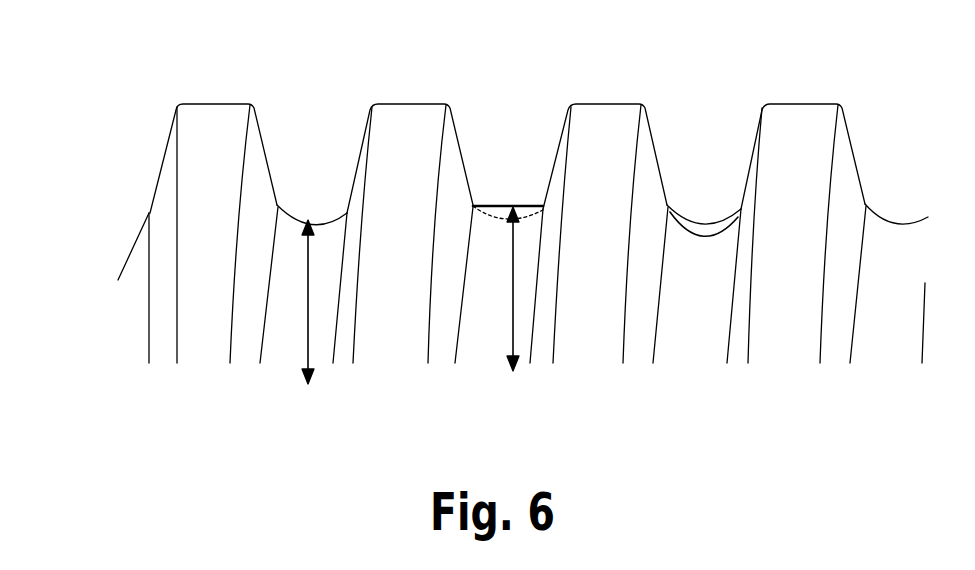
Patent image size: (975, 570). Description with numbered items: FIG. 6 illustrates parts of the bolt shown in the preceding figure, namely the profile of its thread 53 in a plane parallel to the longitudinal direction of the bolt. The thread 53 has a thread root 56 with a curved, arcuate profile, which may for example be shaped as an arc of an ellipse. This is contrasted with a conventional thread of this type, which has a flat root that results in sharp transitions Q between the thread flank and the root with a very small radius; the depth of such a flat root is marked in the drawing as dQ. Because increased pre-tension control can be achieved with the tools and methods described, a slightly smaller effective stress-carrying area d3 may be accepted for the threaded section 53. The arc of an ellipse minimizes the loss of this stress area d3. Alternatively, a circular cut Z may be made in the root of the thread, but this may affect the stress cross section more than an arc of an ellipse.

The thread 53 is at (118, 112).
The thread root 56 is at (298, 218).
The sharp transitions Q is at (475, 200).
The circular cut in the root Z is at (705, 243).
The effective stress-carrying area d3 is at (292, 302).
The depth dQ is at (491, 289).